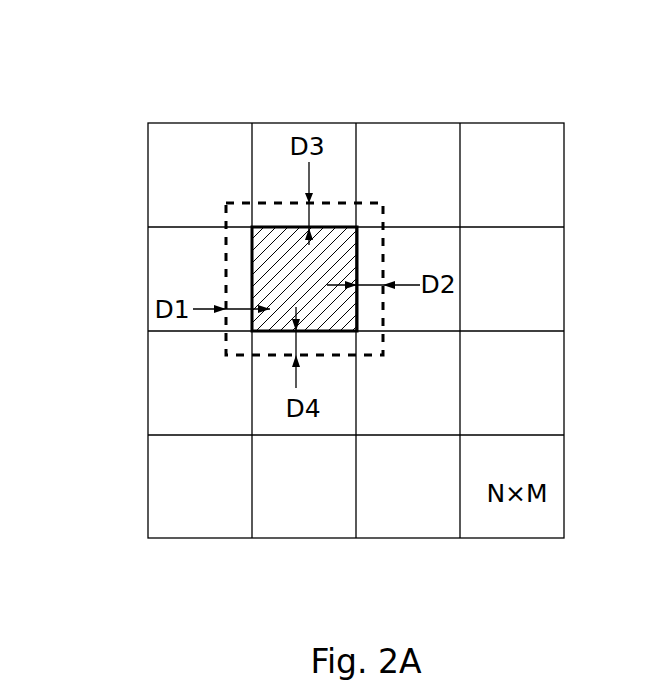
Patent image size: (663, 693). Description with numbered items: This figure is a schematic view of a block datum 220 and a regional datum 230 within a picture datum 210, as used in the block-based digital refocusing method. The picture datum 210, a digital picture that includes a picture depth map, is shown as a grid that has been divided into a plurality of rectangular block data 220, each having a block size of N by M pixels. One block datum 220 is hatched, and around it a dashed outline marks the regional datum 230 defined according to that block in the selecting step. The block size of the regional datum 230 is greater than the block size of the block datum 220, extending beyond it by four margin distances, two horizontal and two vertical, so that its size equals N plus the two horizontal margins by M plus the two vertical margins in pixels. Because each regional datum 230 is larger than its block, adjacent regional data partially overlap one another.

The picture datum 210 is at (137, 100).
The block datum 220 is at (252, 271).
The regional datum 230 is at (392, 243).